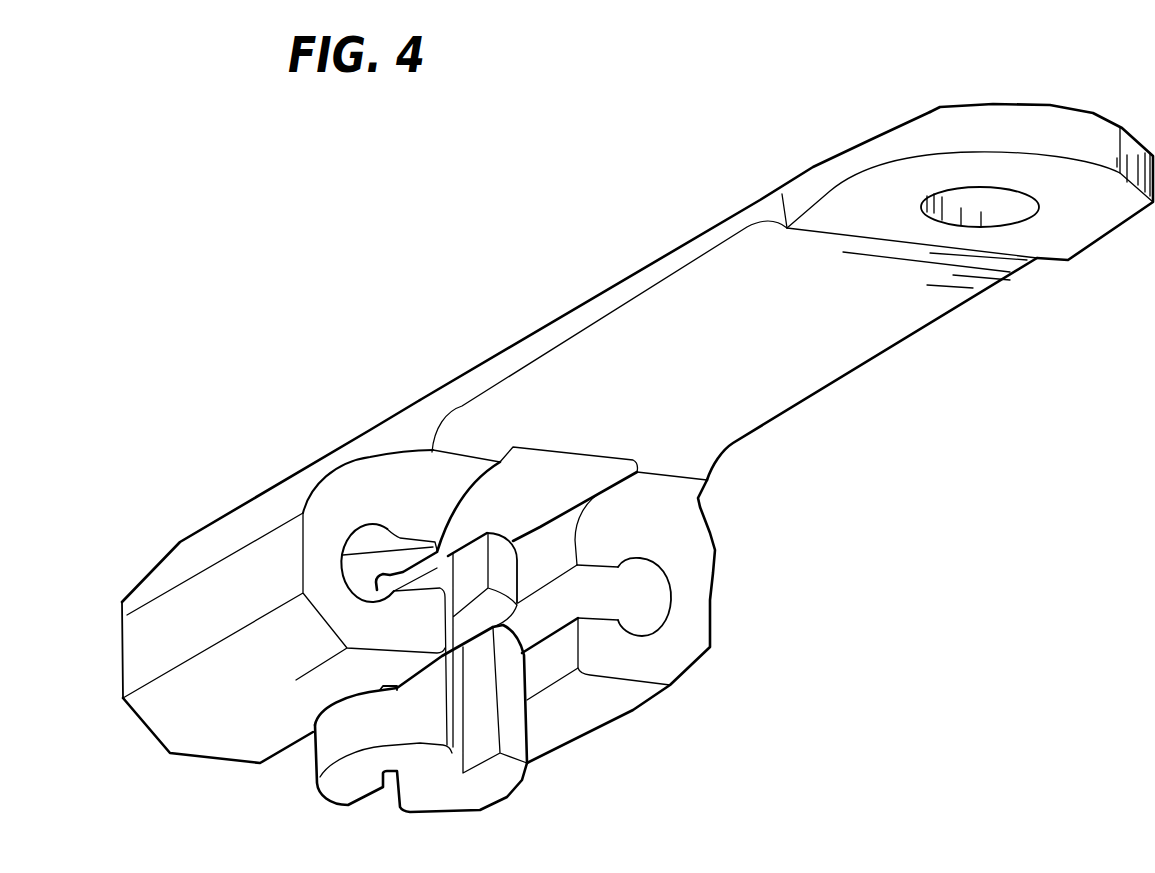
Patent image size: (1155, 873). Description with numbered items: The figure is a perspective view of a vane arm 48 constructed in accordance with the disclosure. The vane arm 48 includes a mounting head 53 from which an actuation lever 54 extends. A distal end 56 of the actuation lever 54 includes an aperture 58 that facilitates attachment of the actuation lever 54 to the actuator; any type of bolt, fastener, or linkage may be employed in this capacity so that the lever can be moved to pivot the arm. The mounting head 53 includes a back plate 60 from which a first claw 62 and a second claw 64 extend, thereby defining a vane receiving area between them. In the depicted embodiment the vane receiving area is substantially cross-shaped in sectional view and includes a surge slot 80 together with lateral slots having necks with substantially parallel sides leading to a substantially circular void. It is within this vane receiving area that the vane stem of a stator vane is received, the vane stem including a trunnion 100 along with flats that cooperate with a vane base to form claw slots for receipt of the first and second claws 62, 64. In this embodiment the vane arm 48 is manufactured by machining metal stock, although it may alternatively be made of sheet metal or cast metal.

The vane arm 48 is at (568, 248).
The mounting head 53 is at (713, 595).
The actuation lever 54 is at (793, 408).
The distal end 56 is at (1088, 137).
The aperture 58 is at (997, 213).
The back plate 60 is at (243, 513).
The first claw 62 is at (217, 740).
The second claw 64 is at (588, 713).
The surge slot 80 is at (542, 475).
The trunnion 100 is at (493, 787).